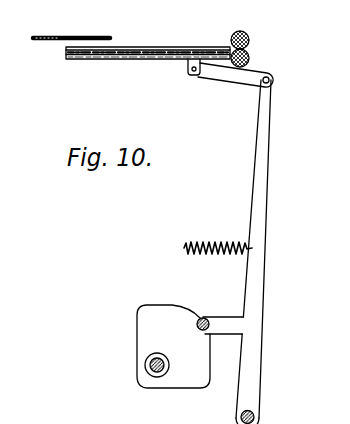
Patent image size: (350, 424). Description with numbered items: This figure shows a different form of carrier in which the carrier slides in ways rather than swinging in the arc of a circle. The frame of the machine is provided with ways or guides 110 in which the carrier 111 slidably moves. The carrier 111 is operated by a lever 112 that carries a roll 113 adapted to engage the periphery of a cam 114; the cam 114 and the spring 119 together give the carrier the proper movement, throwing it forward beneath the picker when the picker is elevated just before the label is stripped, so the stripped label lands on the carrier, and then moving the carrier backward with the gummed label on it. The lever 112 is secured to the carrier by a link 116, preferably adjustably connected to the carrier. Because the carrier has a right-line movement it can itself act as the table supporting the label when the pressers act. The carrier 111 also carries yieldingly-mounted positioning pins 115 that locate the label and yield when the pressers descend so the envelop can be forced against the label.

The ways or guides 110 is at (142, 28).
The carrier 111 is at (180, 60).
The lever 112 is at (262, 178).
The roll 113 is at (208, 318).
The cam 114 is at (137, 317).
The positioning pins 115 is at (208, 47).
The link 116 is at (243, 78).
The spring 119 is at (187, 243).